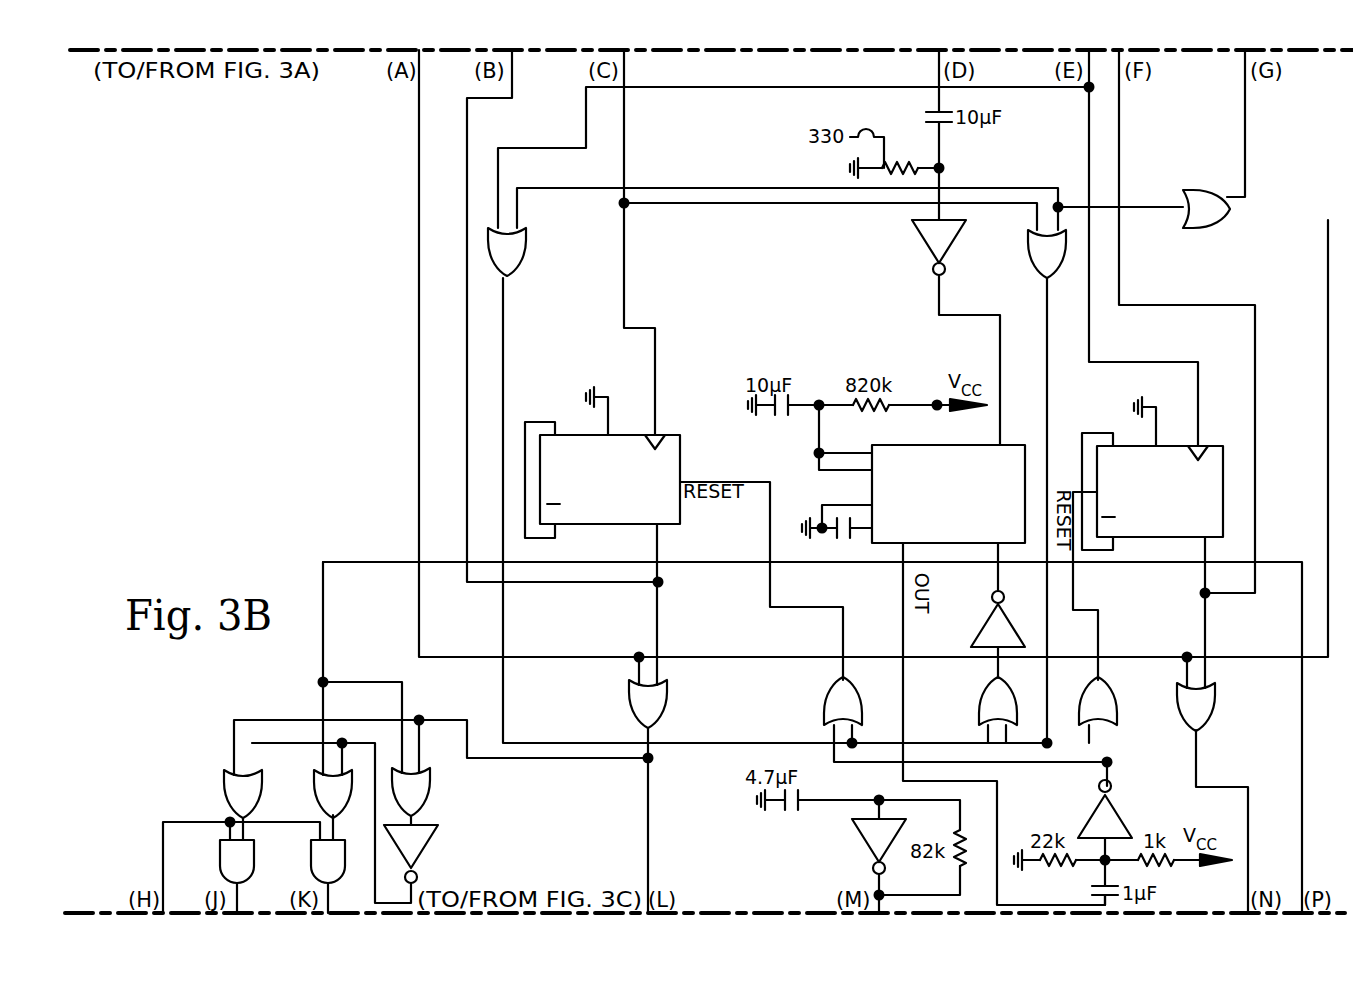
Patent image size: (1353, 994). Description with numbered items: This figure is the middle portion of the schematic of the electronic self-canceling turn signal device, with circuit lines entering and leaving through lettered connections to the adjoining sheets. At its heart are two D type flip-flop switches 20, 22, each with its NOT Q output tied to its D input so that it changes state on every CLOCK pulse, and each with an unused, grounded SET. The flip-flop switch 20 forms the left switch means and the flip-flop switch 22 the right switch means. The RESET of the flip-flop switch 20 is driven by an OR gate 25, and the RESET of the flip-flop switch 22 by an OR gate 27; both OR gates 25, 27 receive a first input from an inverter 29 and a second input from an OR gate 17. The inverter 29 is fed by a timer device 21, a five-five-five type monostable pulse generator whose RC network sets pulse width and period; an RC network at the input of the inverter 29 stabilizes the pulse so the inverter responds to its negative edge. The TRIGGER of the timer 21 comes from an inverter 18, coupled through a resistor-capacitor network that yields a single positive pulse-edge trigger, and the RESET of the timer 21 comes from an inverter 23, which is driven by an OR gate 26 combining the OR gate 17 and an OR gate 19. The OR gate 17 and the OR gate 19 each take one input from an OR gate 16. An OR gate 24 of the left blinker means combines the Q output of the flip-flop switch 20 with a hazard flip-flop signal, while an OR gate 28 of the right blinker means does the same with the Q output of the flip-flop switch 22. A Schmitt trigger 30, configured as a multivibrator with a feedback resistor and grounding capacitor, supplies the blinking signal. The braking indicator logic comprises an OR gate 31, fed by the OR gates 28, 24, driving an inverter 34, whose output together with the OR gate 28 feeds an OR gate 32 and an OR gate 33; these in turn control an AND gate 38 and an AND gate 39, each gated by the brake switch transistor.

The OR gate 16 is at (1206, 209).
The OR gate 17 is at (1047, 254).
The inverter 18 is at (939, 247).
The OR gate 19 is at (507, 252).
The D type flip-flop switch 20 is at (1160, 491).
The timer device 21 is at (927, 487).
The D type flip-flop switch 22 is at (610, 479).
The inverter 23 is at (998, 619).
The OR gate 24 is at (1196, 707).
The OR gate 25 is at (1098, 701).
The OR gate 26 is at (998, 701).
The OR gate 27 is at (843, 701).
The OR gate 28 is at (648, 704).
The inverter 29 is at (1105, 809).
The Schmitt trigger 30 is at (879, 846).
The OR gate 31 is at (411, 792).
The OR gate 32 is at (333, 794).
The OR gate 33 is at (243, 794).
The inverter 34 is at (411, 854).
The AND gate 38 is at (328, 861).
The AND gate 39 is at (237, 861).